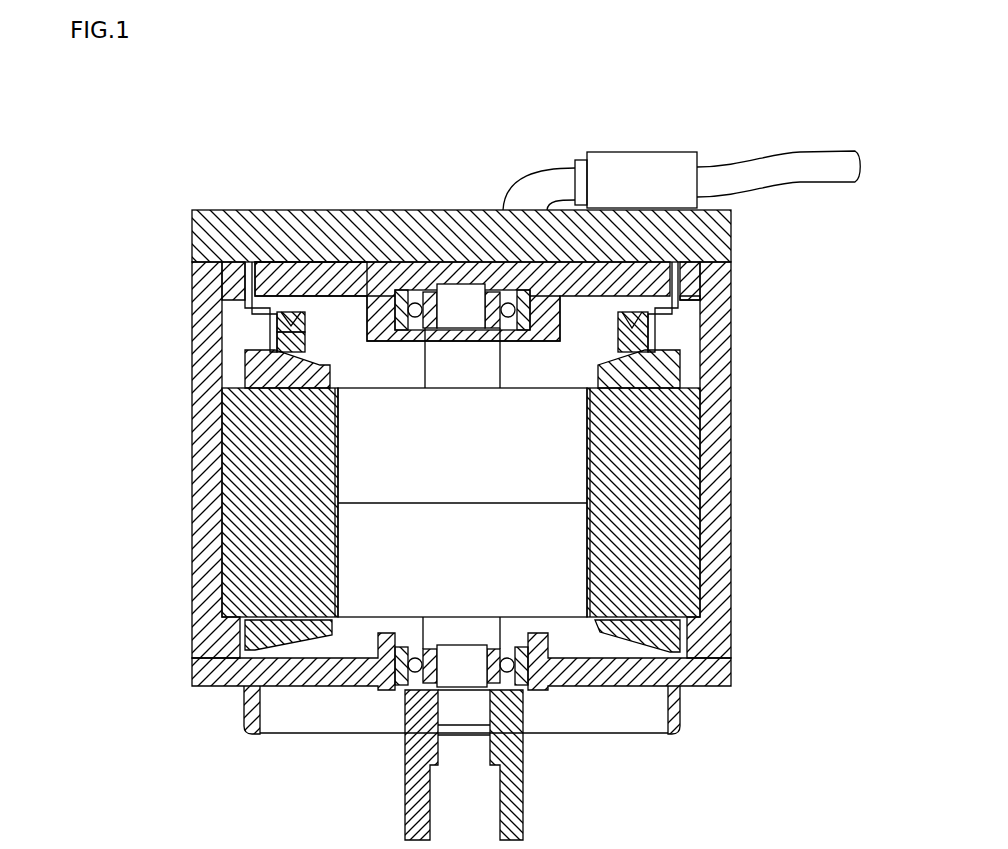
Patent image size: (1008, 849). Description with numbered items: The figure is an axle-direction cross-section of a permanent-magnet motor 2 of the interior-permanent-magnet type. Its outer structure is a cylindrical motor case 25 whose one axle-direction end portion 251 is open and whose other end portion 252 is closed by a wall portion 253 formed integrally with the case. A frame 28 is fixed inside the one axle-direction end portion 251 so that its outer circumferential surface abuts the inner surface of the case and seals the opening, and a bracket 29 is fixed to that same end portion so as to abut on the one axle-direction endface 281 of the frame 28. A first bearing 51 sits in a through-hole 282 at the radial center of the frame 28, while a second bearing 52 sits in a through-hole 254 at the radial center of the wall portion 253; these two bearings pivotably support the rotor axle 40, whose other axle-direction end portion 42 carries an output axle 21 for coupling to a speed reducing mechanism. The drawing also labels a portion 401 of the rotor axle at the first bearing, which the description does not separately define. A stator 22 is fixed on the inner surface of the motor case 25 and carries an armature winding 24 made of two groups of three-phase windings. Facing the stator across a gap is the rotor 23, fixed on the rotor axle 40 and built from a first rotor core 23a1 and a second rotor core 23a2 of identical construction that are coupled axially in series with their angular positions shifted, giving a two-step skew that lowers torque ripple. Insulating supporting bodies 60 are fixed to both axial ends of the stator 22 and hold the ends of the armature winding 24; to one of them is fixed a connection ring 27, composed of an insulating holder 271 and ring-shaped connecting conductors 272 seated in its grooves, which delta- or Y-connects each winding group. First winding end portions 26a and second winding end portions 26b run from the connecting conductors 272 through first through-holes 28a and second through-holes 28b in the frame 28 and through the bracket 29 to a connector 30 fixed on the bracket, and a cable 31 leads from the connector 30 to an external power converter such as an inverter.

The permanent-magnet motor 2 is at (742, 628).
The output axle 21 is at (405, 770).
The stator 22 is at (705, 428).
The rotor 23 is at (454, 502).
The first rotor core 23a1 is at (405, 435).
The second rotor core 23a2 is at (545, 541).
The armature winding 24 is at (262, 377).
The motor case 25 is at (737, 523).
The first winding end portions 26a is at (700, 302).
The second winding end portions 26b is at (280, 325).
The connection ring 27 is at (665, 335).
The holder 271 is at (288, 345).
The connecting conductors 272 is at (272, 360).
The frame 28 is at (351, 216).
The first through-holes 28a is at (715, 290).
The second through-holes 28b is at (268, 300).
The bracket 29 is at (262, 212).
The connector 30 is at (647, 152).
The cable 31 is at (745, 166).
The rotor axle 40 is at (443, 365).
The shaft step portion 401 is at (455, 300).
The other axle-direction end portion 42 is at (457, 708).
The first bearing 51 is at (418, 285).
The second bearing 52 is at (523, 690).
The supporting body 60 is at (250, 646).
The one axle-direction end portion 251 is at (733, 278).
The other end portion 252 is at (732, 684).
The wall portion 253 is at (603, 687).
The through-hole 254 is at (360, 687).
The one axle-direction endface 281 is at (343, 278).
The through-hole 282 is at (397, 285).